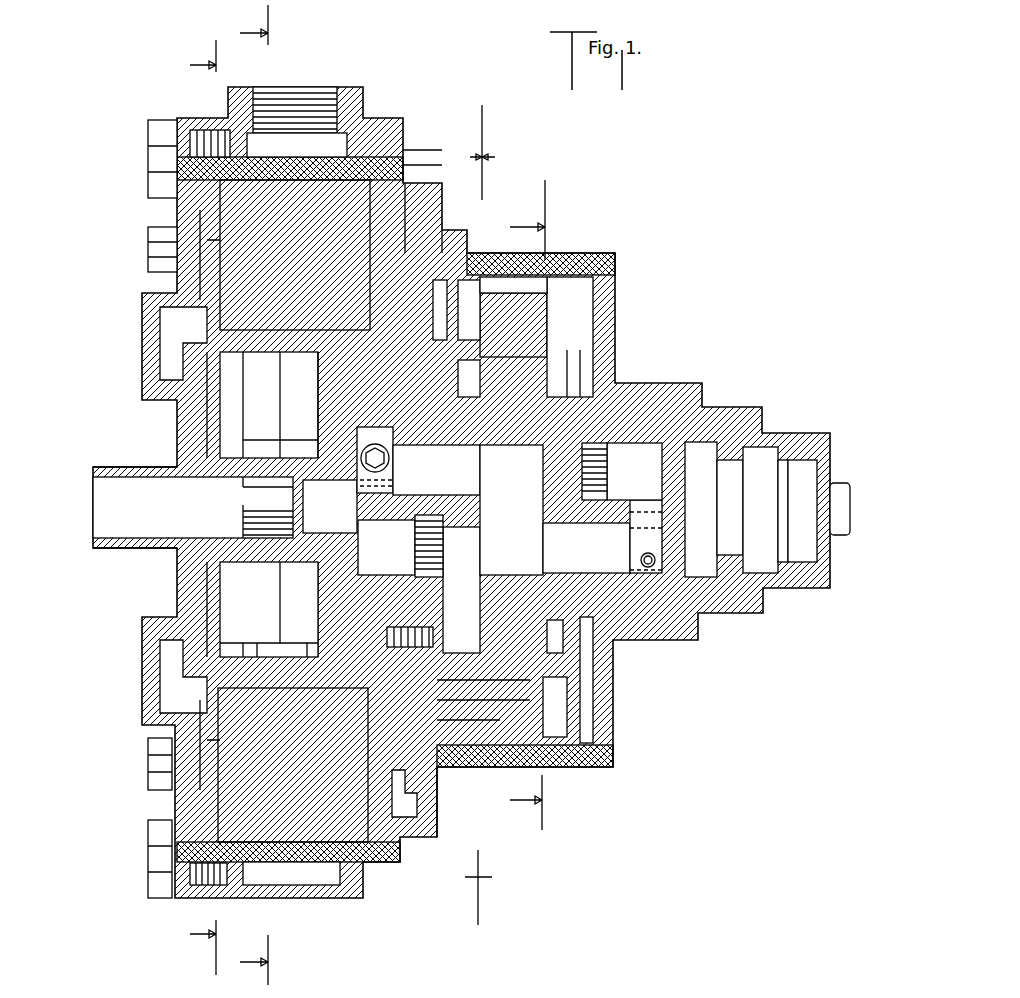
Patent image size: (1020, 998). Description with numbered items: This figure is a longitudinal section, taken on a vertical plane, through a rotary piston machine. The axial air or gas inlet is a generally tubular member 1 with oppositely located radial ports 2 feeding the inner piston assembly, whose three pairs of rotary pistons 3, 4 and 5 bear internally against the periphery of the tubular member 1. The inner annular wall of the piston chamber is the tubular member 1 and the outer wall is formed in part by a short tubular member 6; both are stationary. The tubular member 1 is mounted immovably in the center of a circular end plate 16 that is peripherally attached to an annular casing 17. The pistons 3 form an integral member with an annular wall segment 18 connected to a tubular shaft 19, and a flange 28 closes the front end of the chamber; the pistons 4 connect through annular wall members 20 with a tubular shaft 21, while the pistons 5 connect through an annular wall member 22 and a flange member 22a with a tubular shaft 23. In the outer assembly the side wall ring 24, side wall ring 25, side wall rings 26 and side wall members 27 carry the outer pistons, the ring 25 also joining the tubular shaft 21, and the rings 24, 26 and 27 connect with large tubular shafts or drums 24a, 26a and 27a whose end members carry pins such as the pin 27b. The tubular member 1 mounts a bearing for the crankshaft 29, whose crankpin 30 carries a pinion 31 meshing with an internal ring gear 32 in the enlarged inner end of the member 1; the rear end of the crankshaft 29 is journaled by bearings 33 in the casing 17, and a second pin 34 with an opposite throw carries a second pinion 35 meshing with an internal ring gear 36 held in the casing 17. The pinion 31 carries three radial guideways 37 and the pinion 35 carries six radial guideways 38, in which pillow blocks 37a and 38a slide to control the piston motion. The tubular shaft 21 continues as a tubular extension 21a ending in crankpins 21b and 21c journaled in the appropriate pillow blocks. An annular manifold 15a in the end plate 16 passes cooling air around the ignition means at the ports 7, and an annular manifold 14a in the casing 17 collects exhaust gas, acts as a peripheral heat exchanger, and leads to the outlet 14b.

The tubular member 1 is at (108, 467).
The radial ports 2 is at (253, 528).
The rotary pistons 3 is at (201, 506).
The rotary pistons 4 is at (254, 496).
The rotary pistons 5 is at (491, 518).
The short tubular member 6 is at (361, 515).
The ports 7 is at (527, 506).
The annular manifold 14a is at (313, 875).
The outlet 14b is at (315, 95).
The annular manifold 15a is at (172, 328).
The circular end plate 16 is at (142, 655).
The annular casing 17 is at (400, 150).
The annular wall segment 18 is at (295, 319).
The tubular shaft 19 is at (460, 280).
The annular wall members 20 is at (250, 650).
The tubular shaft 21 is at (322, 660).
The tubular extension 21a is at (462, 680).
The crankpin 21b is at (470, 360).
The crankpin 21c is at (557, 645).
The annular wall member 22 is at (280, 657).
The flange member 22a is at (280, 442).
The tubular shaft 23 is at (338, 400).
The side wall ring 24 is at (200, 262).
The tubular shaft or drum 24a is at (490, 690).
The side wall ring 25 is at (420, 300).
The side wall rings 26 is at (215, 210).
The tubular shaft or drum 26a is at (455, 710).
The side wall members 27 is at (228, 815).
The tubular shaft or drum 27a is at (432, 760).
The pin 27b is at (590, 378).
The flange 28 is at (212, 432).
The crankshaft 29 is at (318, 494).
The crankpin 30 is at (443, 474).
The pinion 31 is at (440, 520).
The internal ring gear 32 is at (418, 544).
The bearings 33 is at (712, 507).
The second pin 34 is at (596, 551).
The second pinion 35 is at (607, 508).
The internal ring gear 36 is at (595, 465).
The radial guideways 37 is at (513, 292).
The pillow blocks 37a is at (483, 440).
The radial guideways 38 is at (555, 720).
The pillow blocks 38a is at (575, 670).